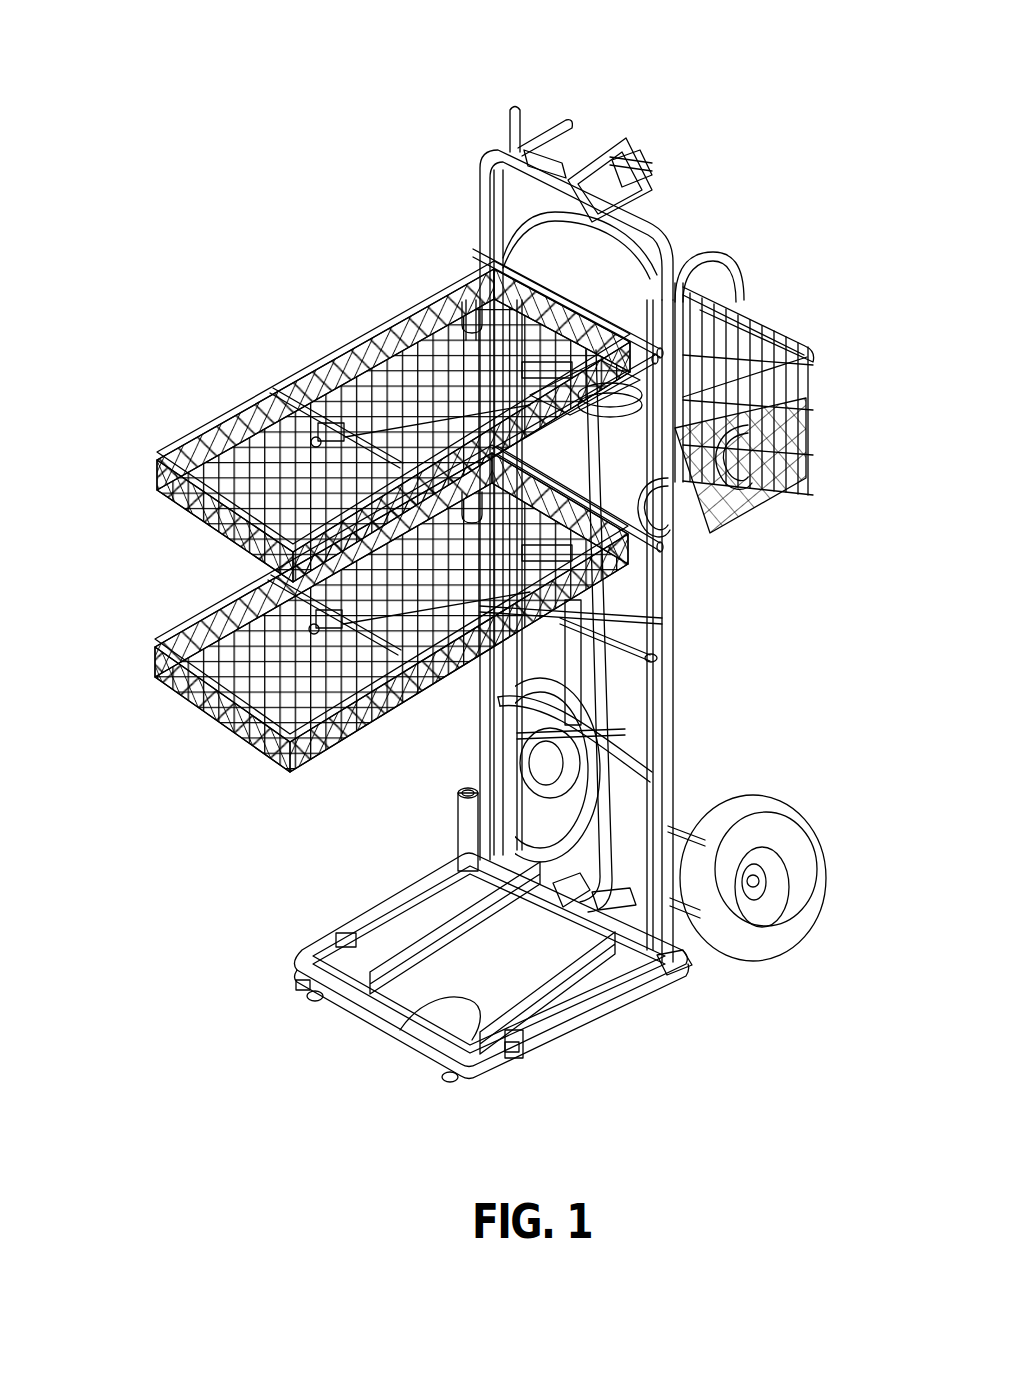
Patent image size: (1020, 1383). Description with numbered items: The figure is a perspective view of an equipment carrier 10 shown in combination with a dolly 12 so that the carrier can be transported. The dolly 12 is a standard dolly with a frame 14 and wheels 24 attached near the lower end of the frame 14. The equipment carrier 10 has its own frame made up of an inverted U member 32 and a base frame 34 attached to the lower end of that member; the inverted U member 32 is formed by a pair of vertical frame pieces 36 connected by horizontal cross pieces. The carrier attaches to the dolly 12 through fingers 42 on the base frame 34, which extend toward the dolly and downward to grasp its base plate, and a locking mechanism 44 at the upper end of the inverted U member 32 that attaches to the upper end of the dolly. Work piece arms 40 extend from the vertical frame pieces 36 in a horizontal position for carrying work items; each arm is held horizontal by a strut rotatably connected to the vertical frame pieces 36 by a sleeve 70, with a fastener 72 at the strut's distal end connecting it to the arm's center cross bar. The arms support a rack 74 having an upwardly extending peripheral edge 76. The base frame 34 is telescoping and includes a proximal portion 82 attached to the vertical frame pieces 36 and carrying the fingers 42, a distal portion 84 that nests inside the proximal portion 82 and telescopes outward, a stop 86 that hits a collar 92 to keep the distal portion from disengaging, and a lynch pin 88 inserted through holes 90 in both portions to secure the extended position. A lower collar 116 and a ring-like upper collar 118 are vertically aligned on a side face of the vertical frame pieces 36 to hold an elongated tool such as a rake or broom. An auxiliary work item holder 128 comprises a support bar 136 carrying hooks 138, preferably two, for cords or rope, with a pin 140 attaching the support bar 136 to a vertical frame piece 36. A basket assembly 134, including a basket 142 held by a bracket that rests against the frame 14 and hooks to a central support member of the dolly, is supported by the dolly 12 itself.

The equipment carrier 10 is at (271, 183).
The dolly 12 is at (692, 214).
The frame 14 is at (690, 599).
The wheels 24 is at (810, 853).
The inverted U member 32 is at (668, 745).
The base frame 34 is at (628, 1018).
The vertical frame pieces 36 is at (669, 768).
The work piece arms 40 is at (306, 340).
The fingers 42 is at (556, 878).
The locking mechanism 44 is at (609, 114).
The sleeve 70 is at (816, 340).
The fastener 72 is at (256, 412).
The rack 74 is at (401, 362).
The upwardly extending peripheral edge 76 is at (155, 459).
The proximal portion 82 is at (642, 1002).
The distal portion 84 is at (298, 978).
The stop 86 is at (493, 975).
The lynch pin 88 is at (296, 950).
The holes 90 is at (338, 940).
The collar 92 is at (447, 1002).
The lower collar 116 is at (460, 806).
The upper collar 118 is at (461, 303).
The auxiliary work item holder 128 is at (805, 472).
The basket assembly 134 is at (782, 314).
The support bar 136 is at (747, 322).
The hooks 138 is at (672, 523).
The pin 140 is at (818, 392).
The basket 142 is at (786, 338).